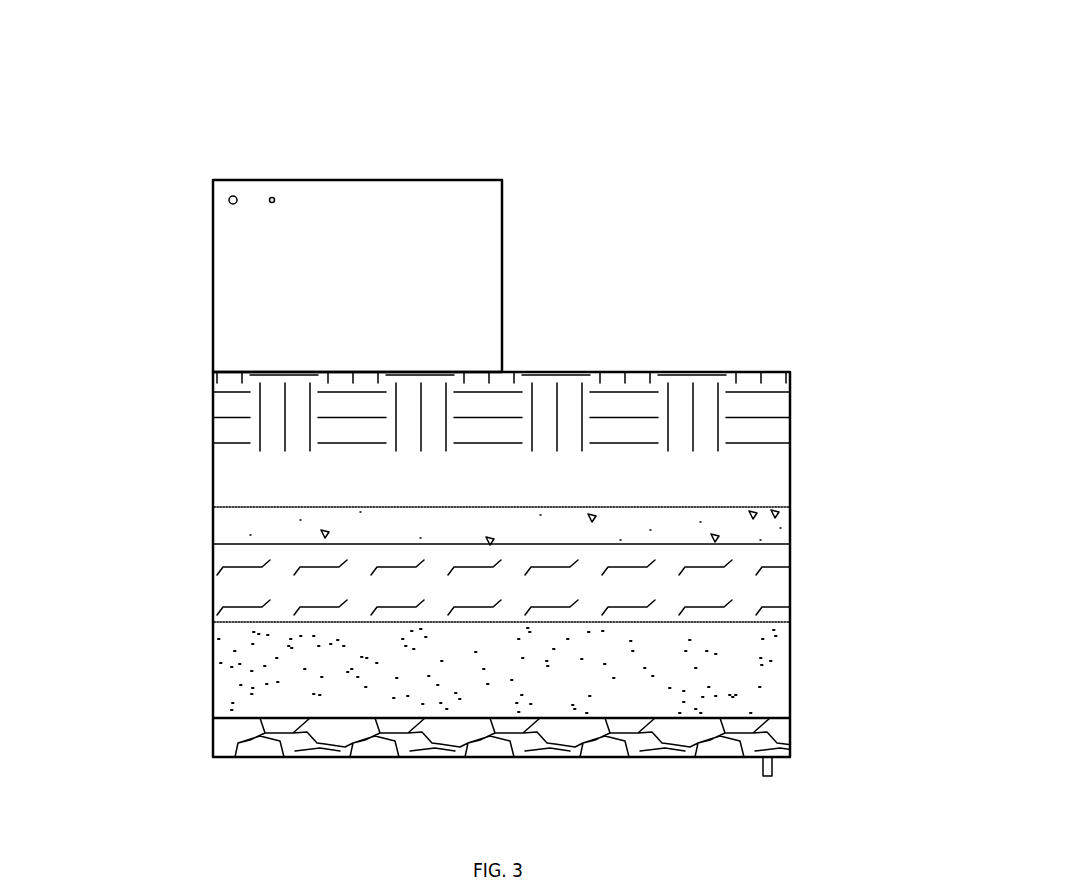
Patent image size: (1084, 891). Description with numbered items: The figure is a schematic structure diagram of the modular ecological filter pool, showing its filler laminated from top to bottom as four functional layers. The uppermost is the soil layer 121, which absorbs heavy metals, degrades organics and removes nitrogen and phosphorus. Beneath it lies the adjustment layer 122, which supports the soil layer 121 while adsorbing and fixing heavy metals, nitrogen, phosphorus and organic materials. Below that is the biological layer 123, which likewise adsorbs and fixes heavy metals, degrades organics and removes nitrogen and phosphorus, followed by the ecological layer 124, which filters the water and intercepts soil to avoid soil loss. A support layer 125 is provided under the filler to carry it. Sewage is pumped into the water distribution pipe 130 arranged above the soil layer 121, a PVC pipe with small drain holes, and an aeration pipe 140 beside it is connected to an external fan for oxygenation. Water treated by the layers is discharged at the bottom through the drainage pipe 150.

The soil layer 121 is at (232, 432).
The adjustment layer 122 is at (233, 533).
The biological layer 123 is at (233, 575).
The ecological layer 124 is at (233, 697).
The support layer 125 is at (233, 736).
The water distribution pipe 130 is at (230, 196).
The aeration pipe 140 is at (274, 198).
The drainage pipe 150 is at (770, 763).